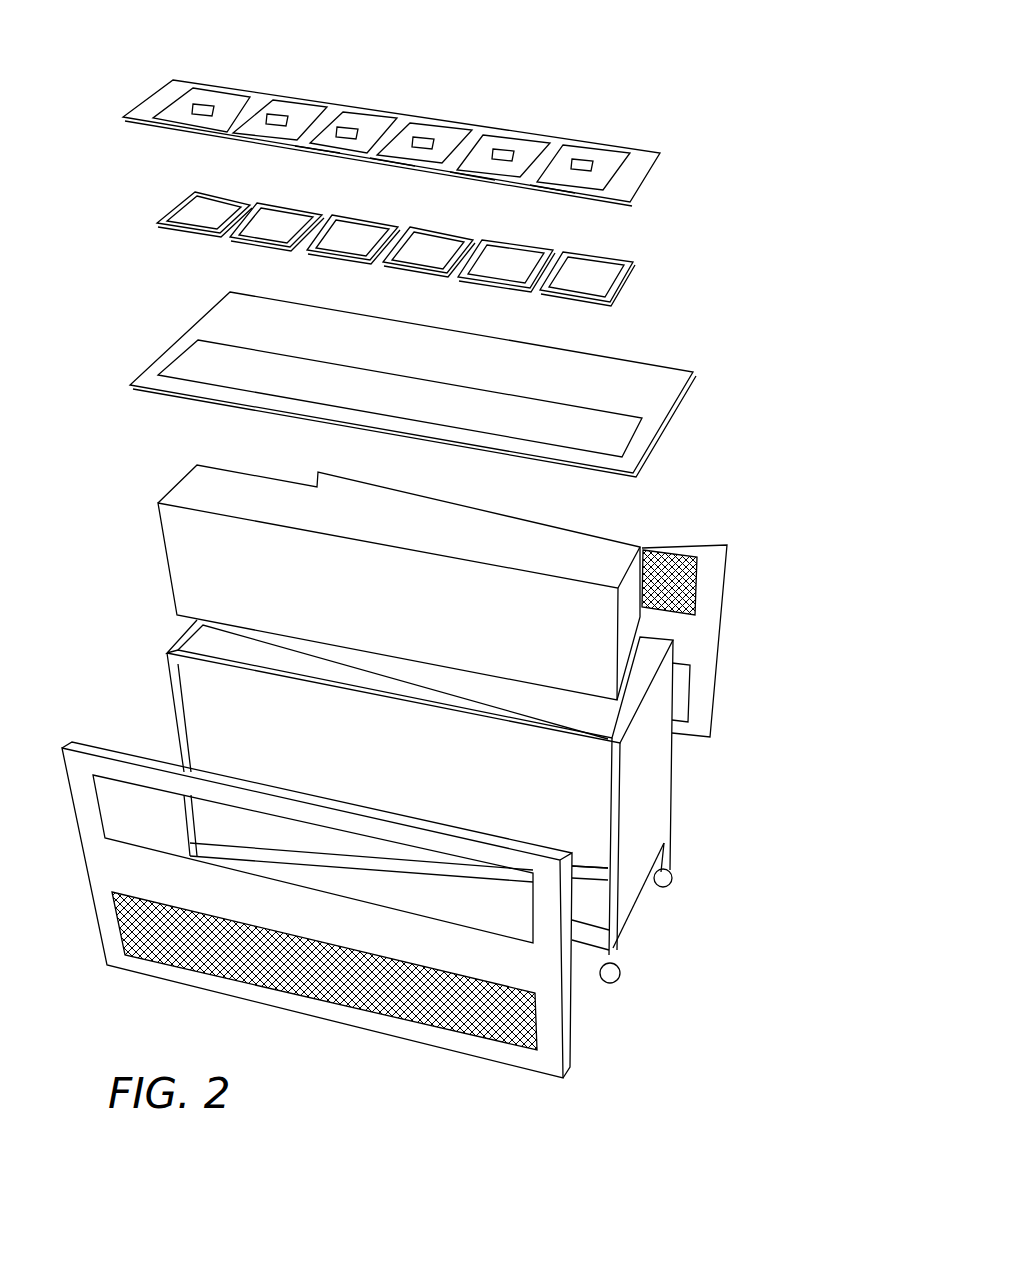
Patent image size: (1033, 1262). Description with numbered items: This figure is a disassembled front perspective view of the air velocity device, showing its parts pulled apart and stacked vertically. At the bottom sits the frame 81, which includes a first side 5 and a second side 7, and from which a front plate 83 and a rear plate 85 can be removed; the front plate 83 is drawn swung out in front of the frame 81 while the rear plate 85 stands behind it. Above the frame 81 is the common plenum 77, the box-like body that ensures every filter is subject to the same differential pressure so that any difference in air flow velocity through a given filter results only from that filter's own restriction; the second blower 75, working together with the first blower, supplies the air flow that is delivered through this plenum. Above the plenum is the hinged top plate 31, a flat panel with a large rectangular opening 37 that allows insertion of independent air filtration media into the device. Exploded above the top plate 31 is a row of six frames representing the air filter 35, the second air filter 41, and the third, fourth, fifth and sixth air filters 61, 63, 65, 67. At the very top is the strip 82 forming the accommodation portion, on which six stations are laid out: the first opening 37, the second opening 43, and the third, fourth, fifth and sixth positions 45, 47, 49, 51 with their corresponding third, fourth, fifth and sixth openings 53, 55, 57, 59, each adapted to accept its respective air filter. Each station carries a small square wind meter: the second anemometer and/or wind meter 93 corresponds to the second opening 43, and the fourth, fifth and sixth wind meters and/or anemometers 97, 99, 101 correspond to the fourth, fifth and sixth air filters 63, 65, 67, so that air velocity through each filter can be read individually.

The first side 5 is at (587, 845).
The second side 7 is at (670, 762).
The top plate 31 is at (655, 390).
The air filter 35 is at (195, 218).
The opening 37 is at (223, 90).
The second air filter 41 is at (268, 232).
The second opening 43 is at (283, 110).
The third position 45 is at (373, 107).
The fourth position 47 is at (447, 127).
The fifth position 49 is at (523, 133).
The sixth position 51 is at (610, 148).
The third opening 53 is at (320, 140).
The fourth opening 55 is at (397, 153).
The fifth opening 57 is at (478, 165).
The sixth opening 59 is at (553, 177).
The third air filter 61 is at (343, 245).
The fourth air filter 63 is at (420, 258).
The fifth air filter 65 is at (497, 270).
The sixth air filter 67 is at (577, 283).
The second blower 75 is at (348, 127).
The common plenum 77 is at (645, 560).
The frame 81 is at (653, 773).
The circuit board strip 82 is at (633, 183).
The front plate 83 is at (553, 1022).
The rear plate 85 is at (708, 582).
The second anemometer and/or wind meter 93 is at (207, 107).
The fourth wind meter and/or anemometer 97 is at (422, 140).
The fifth wind meter and/or anemometer 99 is at (500, 153).
The sixth wind meter and/or anemometer 101 is at (582, 162).